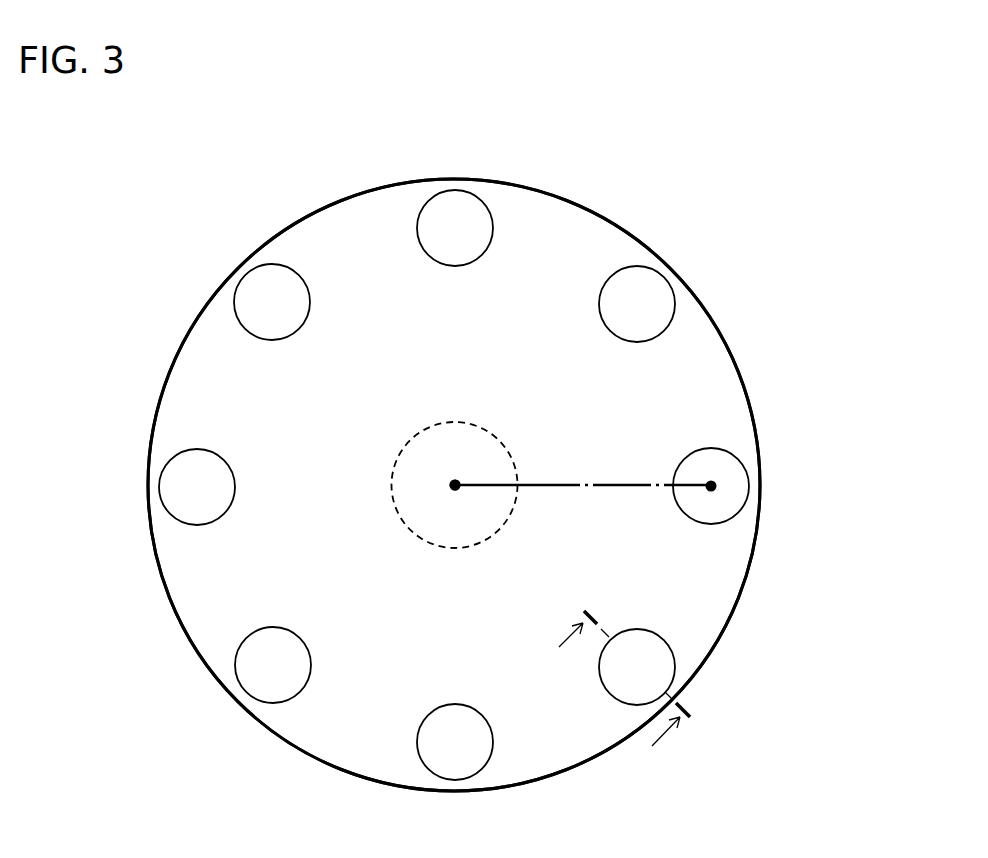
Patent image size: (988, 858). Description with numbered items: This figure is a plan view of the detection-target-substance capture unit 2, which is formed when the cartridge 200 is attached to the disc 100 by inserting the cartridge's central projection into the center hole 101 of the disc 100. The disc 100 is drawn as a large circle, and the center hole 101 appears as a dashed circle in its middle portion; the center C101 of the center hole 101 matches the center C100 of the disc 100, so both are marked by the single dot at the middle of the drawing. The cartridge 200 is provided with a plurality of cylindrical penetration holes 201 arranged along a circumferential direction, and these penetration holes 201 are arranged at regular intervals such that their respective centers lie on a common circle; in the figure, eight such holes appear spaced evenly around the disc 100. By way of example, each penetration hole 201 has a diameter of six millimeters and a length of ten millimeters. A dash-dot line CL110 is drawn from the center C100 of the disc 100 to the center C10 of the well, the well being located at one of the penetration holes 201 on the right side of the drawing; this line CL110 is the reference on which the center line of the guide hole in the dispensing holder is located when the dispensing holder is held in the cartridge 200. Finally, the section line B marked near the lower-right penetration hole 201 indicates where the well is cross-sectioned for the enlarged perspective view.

The detection-target-substance capture unit 2 is at (648, 187).
The disc 100 is at (742, 377).
The cartridge 200 is at (742, 593).
The penetration holes 201 is at (471, 198).
The center hole 101 is at (503, 438).
The line CL110 is at (560, 483).
The center of the well C10 is at (714, 484).
The center of the disc C100 is at (551, 527).
The center of the center hole C101 is at (460, 487).
The line B- B is at (616, 688).